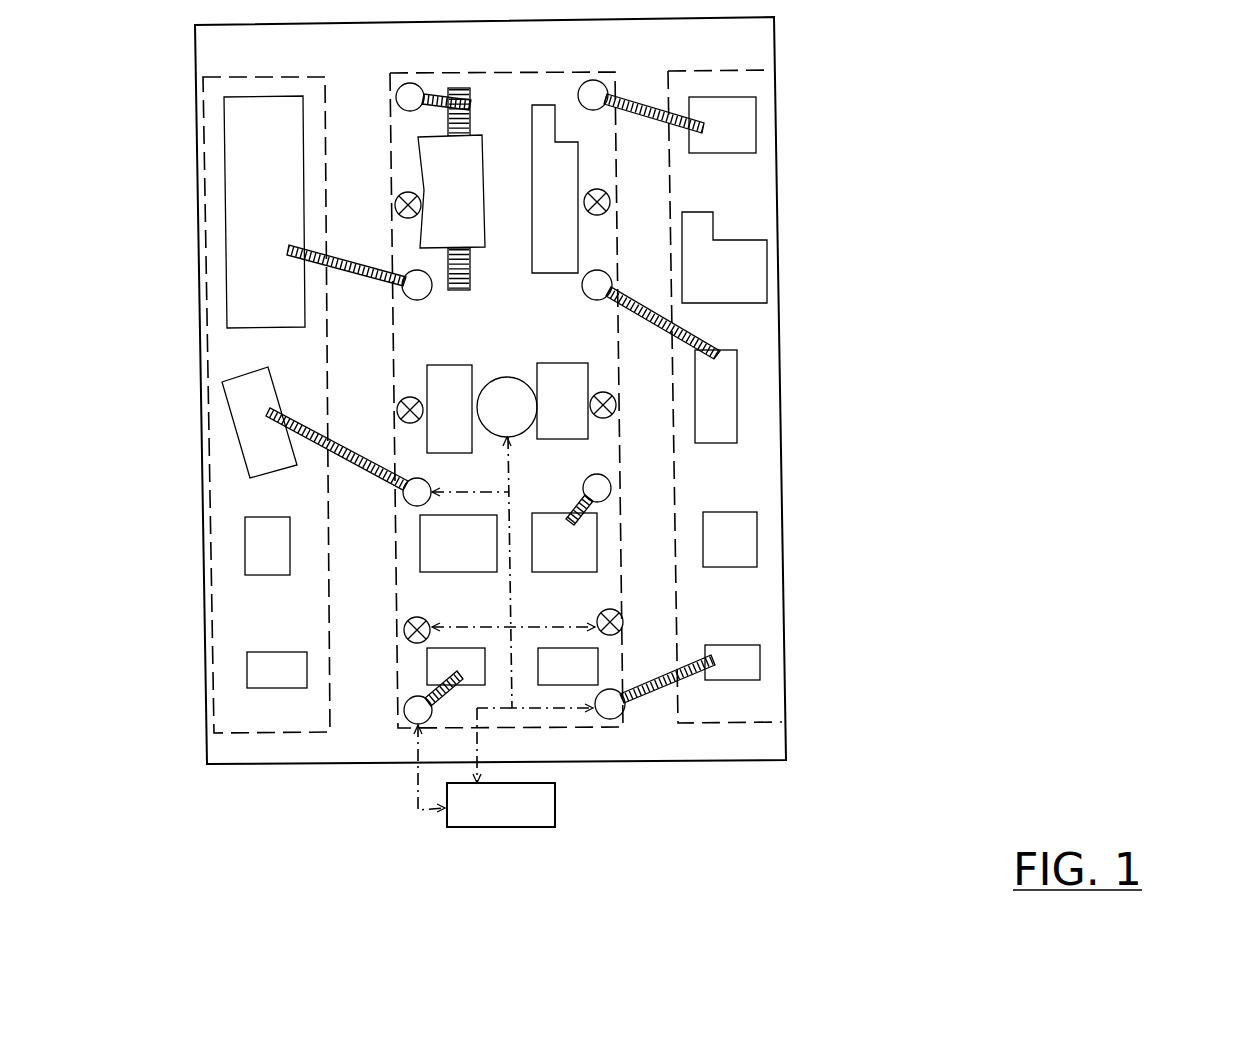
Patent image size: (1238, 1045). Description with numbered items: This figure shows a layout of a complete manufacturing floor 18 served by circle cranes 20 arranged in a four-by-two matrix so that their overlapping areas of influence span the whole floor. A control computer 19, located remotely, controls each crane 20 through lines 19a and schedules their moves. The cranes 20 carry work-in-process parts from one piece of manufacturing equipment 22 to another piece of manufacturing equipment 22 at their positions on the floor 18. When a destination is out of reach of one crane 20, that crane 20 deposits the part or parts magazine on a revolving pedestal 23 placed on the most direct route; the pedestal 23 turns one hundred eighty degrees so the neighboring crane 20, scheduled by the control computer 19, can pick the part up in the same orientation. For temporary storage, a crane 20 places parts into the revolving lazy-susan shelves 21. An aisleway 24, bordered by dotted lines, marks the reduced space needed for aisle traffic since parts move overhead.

The manufacturing floor 18 is at (520, 346).
The control computer 19 is at (555, 798).
The lines 19a is at (417, 770).
The circle crane 20 is at (597, 285).
The revolving lazy-susan shelves 21 is at (714, 452).
The manufacturing equipment 22 is at (738, 422).
The revolving pedestal 23 is at (625, 622).
The aisleway 24 is at (488, 751).